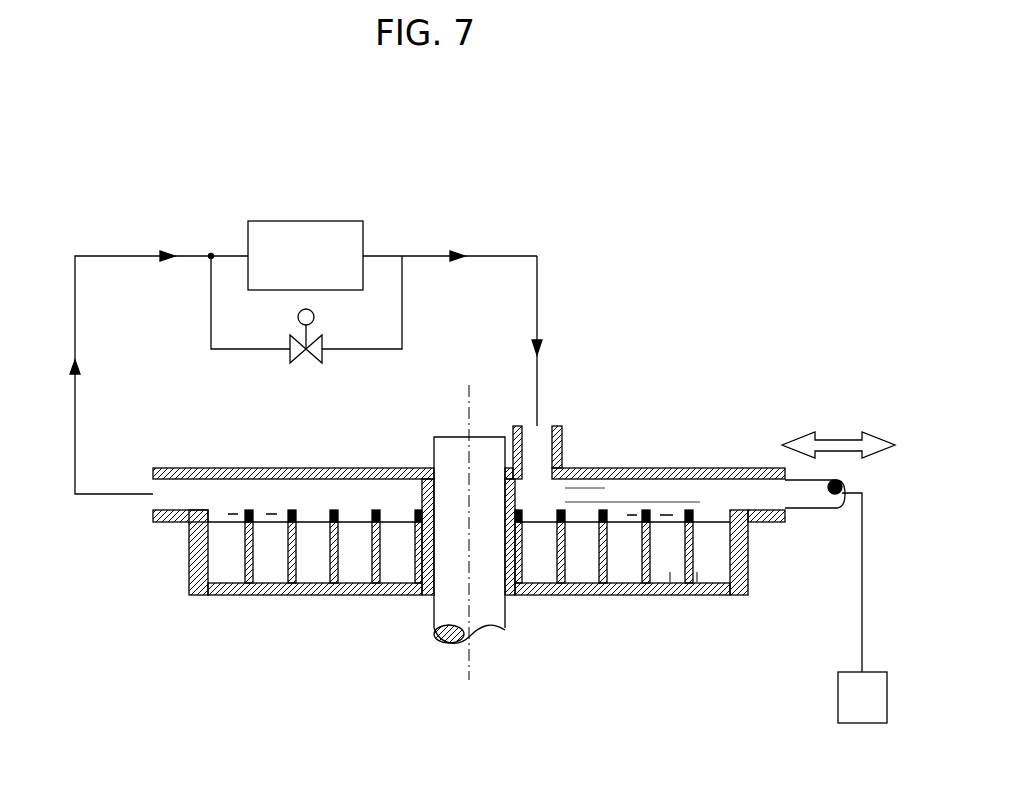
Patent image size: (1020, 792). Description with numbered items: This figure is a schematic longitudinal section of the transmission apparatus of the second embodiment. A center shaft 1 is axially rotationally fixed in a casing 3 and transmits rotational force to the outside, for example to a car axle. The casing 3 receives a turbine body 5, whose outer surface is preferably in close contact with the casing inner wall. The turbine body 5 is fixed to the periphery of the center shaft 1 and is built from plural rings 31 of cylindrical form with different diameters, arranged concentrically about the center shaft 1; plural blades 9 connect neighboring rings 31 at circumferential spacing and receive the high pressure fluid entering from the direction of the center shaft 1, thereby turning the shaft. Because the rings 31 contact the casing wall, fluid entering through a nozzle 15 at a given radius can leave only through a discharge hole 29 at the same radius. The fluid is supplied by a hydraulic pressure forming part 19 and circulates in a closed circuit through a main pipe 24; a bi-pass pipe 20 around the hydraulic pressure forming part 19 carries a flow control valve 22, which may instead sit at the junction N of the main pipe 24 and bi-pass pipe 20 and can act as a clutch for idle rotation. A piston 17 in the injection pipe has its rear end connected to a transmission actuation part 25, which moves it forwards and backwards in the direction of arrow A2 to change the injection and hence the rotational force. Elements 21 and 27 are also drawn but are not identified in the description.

The center shaft 1 is at (490, 627).
The casing 3 is at (628, 595).
The turbine body 5 is at (448, 595).
The blades 9 is at (697, 583).
The nozzle 15 is at (660, 513).
The piston 17 is at (812, 500).
The hydraulic pressure forming part 19 is at (355, 242).
The bi-pass pipe 20 is at (236, 349).
The inlet pipe 21 is at (565, 426).
The flow control valve 22 is at (292, 355).
The main pipe 24 is at (125, 257).
The transmission actuation part 25 is at (848, 700).
The tube wall 27 is at (162, 467).
The discharge hole 29 is at (273, 512).
The rings 31 is at (275, 595).
The arrow A2 is at (845, 448).
The junction N is at (208, 258).